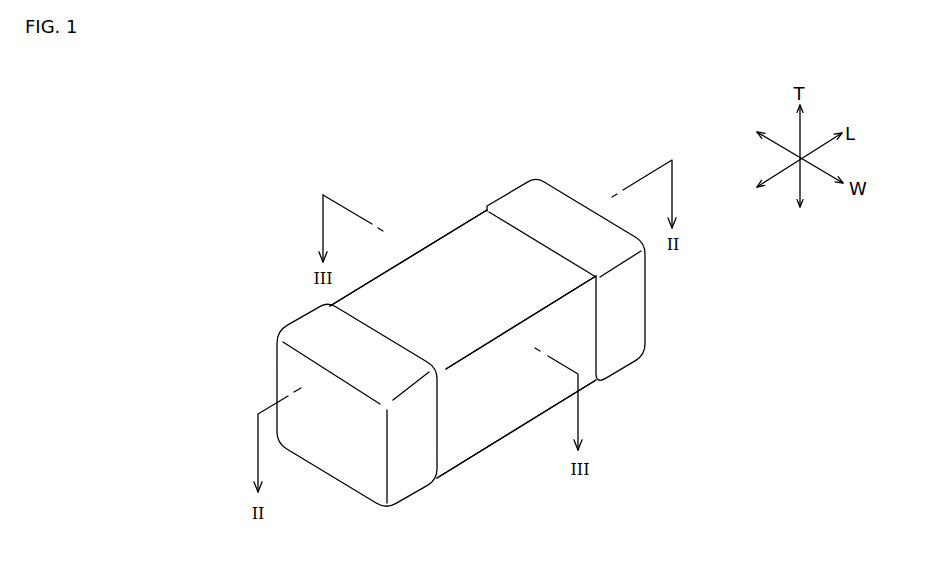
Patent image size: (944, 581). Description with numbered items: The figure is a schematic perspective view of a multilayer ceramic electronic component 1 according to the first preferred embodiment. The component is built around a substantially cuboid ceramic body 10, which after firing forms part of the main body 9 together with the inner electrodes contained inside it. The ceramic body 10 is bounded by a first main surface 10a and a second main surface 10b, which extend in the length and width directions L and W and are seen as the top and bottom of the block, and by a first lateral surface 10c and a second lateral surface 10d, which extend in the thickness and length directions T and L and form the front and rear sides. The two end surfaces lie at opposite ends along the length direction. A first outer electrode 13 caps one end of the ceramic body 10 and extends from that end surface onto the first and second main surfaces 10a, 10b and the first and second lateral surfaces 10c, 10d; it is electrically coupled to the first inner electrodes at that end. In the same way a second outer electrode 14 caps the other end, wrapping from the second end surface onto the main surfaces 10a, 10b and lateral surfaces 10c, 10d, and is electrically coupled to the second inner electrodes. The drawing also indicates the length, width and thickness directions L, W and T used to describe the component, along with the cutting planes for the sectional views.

The multilayer ceramic electronic component 1 is at (602, 150).
The main body 9 is at (422, 158).
The ceramic body 10 is at (448, 213).
The first main surface 10a is at (442, 263).
The second main surface 10b is at (500, 443).
The first lateral surface 10c is at (473, 217).
The second lateral surface 10d is at (462, 445).
The first outer electrode 13 is at (276, 379).
The second outer electrode 14 is at (649, 305).